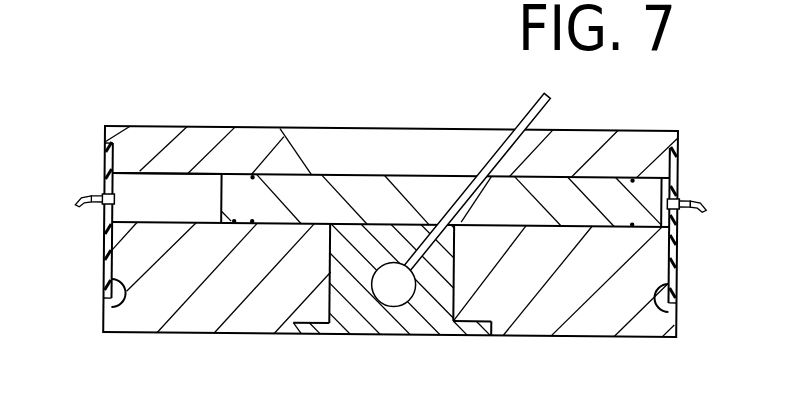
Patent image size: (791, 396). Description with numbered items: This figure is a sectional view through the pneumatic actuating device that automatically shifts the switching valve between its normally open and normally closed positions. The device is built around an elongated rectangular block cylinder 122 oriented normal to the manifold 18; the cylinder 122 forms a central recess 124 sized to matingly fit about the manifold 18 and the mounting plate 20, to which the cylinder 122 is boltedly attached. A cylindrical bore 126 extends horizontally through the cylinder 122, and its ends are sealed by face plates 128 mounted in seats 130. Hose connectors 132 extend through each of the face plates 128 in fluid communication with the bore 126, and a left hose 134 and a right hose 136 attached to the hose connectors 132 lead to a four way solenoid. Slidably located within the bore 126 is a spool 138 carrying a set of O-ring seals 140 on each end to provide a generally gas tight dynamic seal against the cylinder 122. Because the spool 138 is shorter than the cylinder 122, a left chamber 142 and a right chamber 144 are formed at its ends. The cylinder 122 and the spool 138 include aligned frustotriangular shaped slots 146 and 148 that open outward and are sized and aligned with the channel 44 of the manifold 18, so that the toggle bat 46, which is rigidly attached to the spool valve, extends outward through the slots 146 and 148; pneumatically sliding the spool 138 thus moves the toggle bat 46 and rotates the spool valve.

The manifold 18 is at (457, 297).
The mounting plate 20 is at (468, 330).
The channel 44 is at (407, 245).
The toggle bat 46 is at (534, 108).
The block cylinder 122 is at (172, 126).
The central recess 124 is at (333, 271).
The cylindrical bore 126 is at (128, 168).
The face plates 128 is at (105, 235).
The seats 130 is at (112, 303).
The hose connectors 132 is at (103, 196).
The left hose 134 is at (90, 198).
The right hose 136 is at (703, 200).
The spool 138 is at (253, 175).
The O-ring seals 140 is at (233, 177).
The left chamber 142 is at (158, 180).
The right chamber 144 is at (678, 223).
The slot of the cylinder 146 is at (373, 148).
The slot of the spool 148 is at (425, 188).